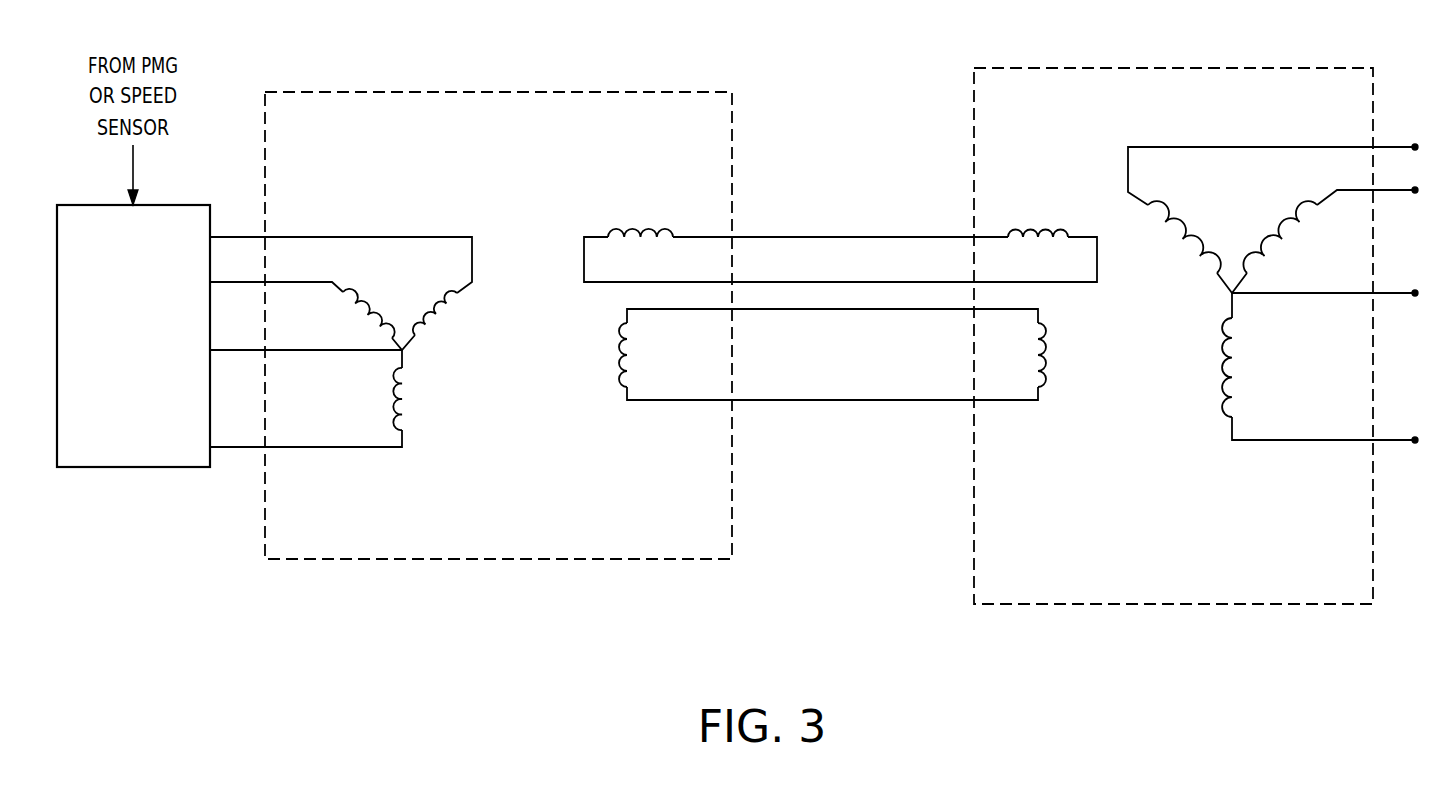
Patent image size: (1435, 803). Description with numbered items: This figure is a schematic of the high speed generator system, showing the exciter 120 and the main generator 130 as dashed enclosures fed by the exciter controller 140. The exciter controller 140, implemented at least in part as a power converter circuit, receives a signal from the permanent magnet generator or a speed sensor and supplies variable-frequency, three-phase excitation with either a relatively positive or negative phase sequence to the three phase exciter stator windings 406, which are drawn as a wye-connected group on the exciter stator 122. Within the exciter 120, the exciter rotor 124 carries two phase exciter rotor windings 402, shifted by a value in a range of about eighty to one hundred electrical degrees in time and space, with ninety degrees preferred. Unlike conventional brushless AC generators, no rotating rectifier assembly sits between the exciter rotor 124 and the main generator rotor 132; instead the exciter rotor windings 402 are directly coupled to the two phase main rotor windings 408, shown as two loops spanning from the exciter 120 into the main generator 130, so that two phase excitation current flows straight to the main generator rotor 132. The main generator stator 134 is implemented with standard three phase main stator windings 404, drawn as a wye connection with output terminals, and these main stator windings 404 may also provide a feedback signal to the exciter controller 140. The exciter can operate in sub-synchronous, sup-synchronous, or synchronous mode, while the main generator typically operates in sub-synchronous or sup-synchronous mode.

The exciter 120 is at (513, 90).
The exciter stator 122 is at (397, 220).
The exciter rotor 124 is at (693, 220).
The main generator 130 is at (1165, 66).
The main generator rotor 132 is at (1022, 195).
The main generator stator 134 is at (1297, 134).
The exciter controller 140 is at (130, 467).
The exciter rotor windings 402 is at (612, 232).
The main stator windings 404 is at (1184, 232).
The exciter stator windings 406 is at (372, 295).
The main rotor windings 408 is at (1065, 232).